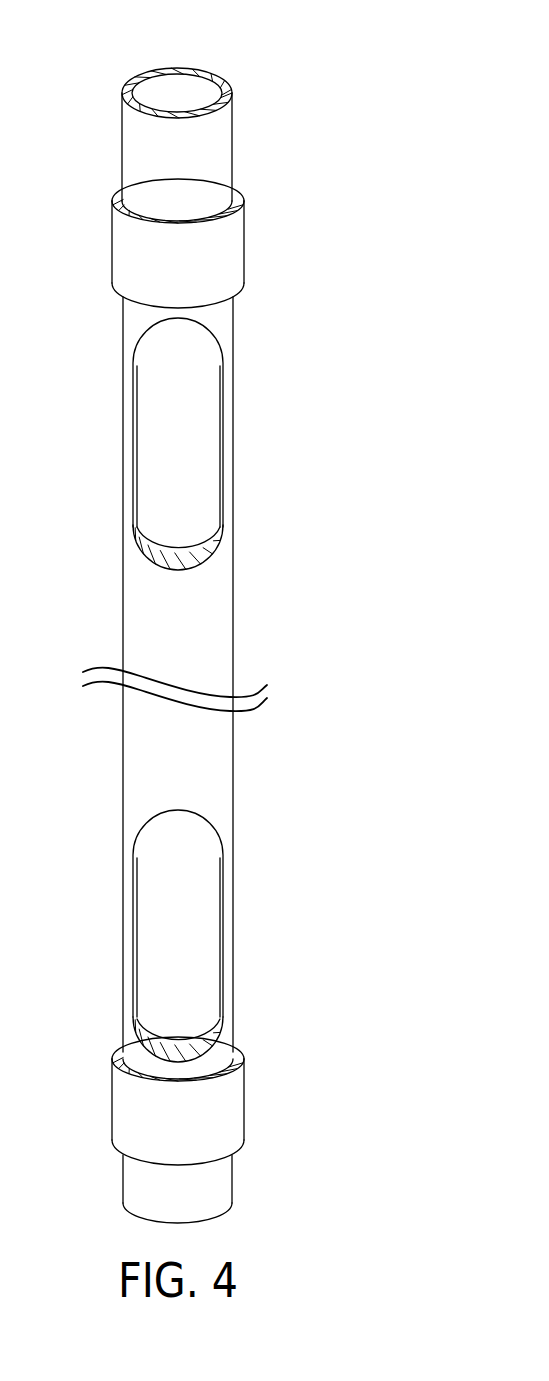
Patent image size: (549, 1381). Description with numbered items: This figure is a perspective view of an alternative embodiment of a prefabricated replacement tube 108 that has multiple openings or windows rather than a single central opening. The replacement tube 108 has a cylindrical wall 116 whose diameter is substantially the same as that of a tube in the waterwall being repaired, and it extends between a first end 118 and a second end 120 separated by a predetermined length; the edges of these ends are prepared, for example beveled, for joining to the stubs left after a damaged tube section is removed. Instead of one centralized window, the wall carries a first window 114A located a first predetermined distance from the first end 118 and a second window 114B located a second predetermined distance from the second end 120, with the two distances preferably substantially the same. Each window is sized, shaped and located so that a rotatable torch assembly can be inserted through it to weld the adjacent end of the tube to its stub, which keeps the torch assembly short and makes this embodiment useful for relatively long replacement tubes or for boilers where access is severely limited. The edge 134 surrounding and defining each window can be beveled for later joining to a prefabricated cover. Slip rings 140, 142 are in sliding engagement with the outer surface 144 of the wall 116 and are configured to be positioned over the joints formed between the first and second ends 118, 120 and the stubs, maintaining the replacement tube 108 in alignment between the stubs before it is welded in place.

The prefabricated replacement tube 108 is at (100, 66).
The cylindrical wall 116 is at (228, 76).
The first end 118 is at (250, 137).
The slip ring 140 is at (112, 250).
The outer surface 144 is at (252, 337).
The first window 114A is at (197, 433).
The second window 114B is at (197, 908).
The edge 134 is at (175, 545).
The slip ring 142 is at (112, 1110).
The second end 120 is at (249, 1178).